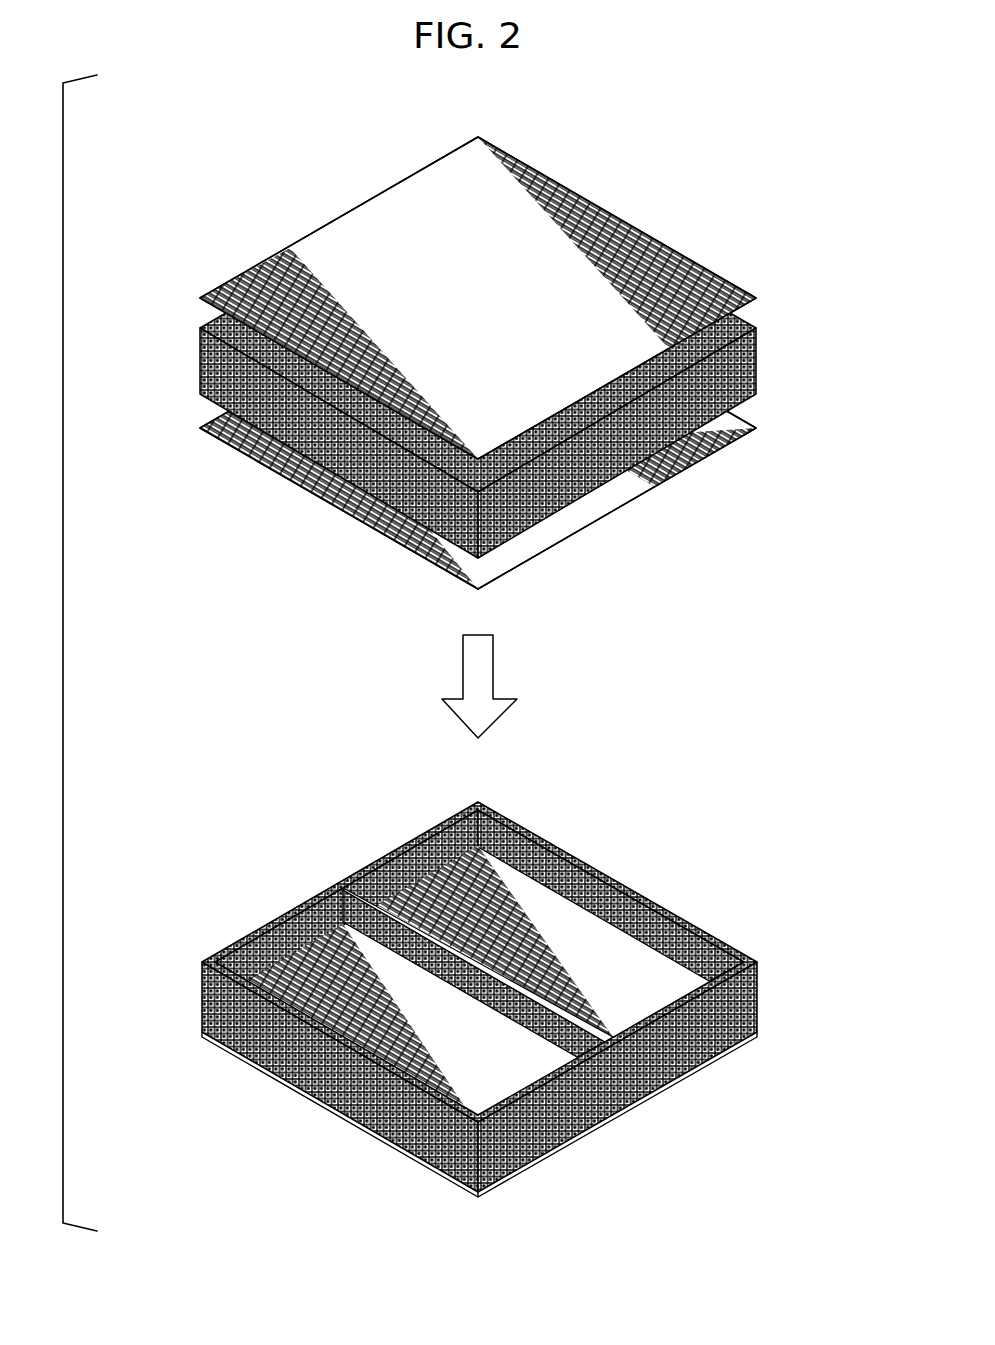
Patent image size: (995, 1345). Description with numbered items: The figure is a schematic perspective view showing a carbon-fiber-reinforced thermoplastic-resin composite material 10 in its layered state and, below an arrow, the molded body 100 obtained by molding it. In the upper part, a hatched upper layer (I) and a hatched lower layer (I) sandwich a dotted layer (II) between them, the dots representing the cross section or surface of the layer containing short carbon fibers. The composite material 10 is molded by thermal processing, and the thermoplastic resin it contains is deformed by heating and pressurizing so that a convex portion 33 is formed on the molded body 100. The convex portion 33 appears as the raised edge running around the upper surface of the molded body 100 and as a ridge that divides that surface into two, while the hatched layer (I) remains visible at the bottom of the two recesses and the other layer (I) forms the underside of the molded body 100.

The carbon-fiber-reinforced thermoplastic-resin composite material 10 is at (340, 186).
The molded body 100 is at (339, 838).
The convex portion 33 is at (207, 976).